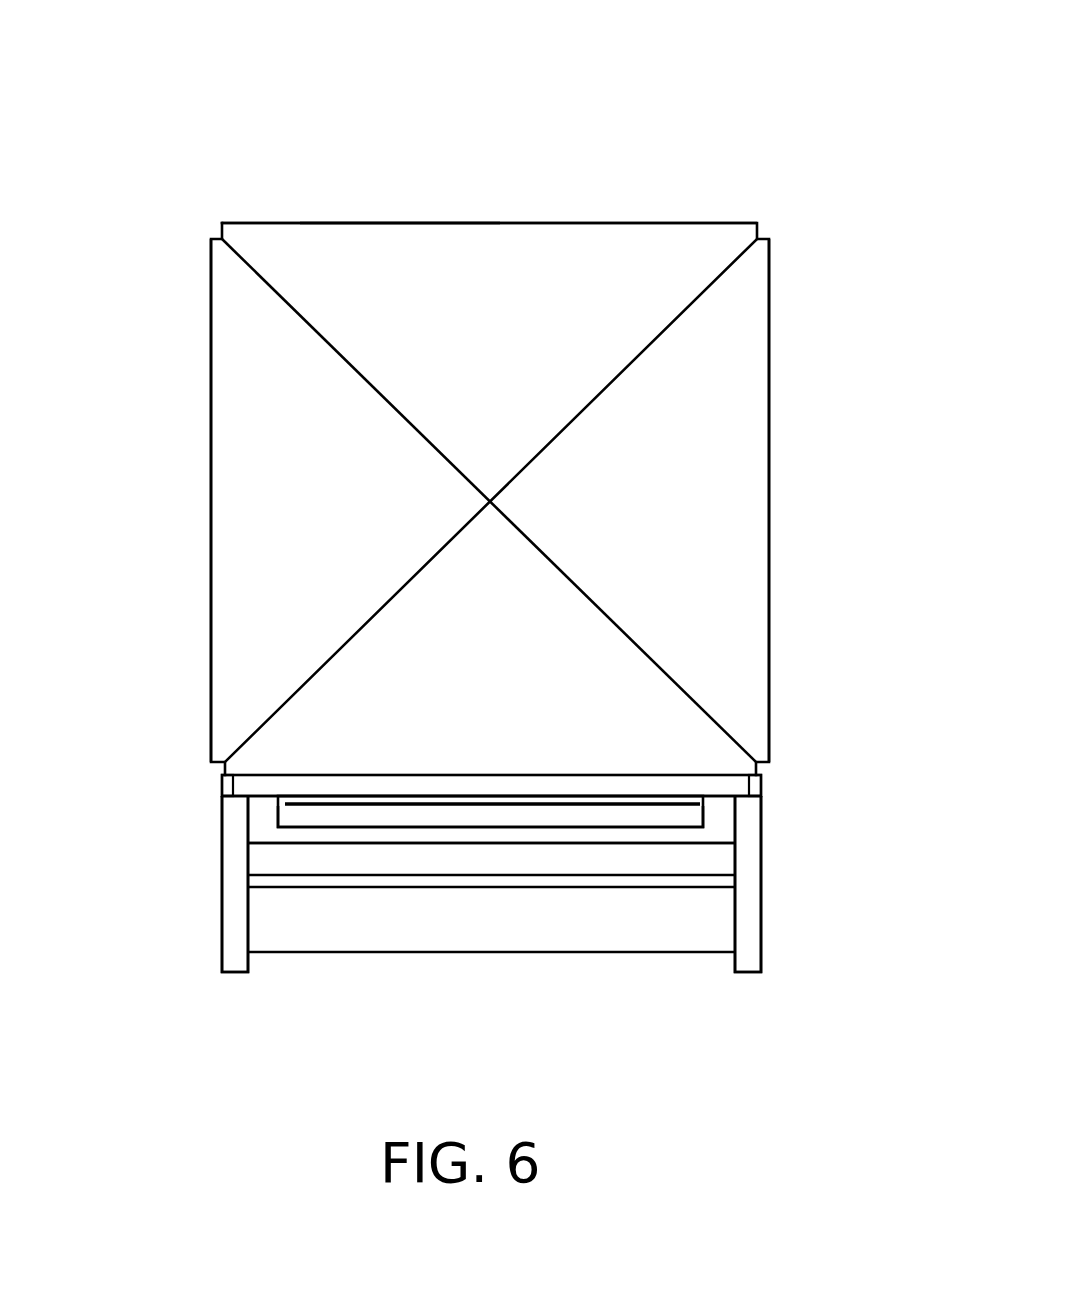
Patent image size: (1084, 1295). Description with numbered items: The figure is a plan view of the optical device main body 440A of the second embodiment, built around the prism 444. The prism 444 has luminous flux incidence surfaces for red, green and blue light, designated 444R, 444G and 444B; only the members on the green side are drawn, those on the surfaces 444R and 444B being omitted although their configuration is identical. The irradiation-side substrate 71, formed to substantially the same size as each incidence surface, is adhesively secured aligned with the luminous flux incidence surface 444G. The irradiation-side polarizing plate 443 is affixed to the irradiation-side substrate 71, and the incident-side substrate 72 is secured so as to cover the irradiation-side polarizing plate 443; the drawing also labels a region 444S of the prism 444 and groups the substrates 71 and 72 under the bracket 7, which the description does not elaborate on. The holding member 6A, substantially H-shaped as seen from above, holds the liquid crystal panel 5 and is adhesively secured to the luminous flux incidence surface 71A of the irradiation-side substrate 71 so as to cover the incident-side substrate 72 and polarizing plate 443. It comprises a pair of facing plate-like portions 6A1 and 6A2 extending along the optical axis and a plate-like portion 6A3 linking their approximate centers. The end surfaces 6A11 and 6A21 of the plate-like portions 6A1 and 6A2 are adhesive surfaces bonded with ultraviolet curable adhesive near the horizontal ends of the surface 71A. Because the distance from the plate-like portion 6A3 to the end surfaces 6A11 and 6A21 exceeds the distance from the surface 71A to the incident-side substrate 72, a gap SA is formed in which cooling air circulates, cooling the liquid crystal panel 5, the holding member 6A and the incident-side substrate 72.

The optical device main body 440A is at (805, 160).
The prism 444 is at (622, 248).
The light exit surface of cross dichroic prism 444S is at (400, 223).
The luminous flux incidence surface for red light 444R is at (211, 478).
The luminous flux incidence surface for blue light 444B is at (768, 470).
The luminous flux incidence surface for green light 444G is at (480, 777).
The irradiation-side polarizing plate 443 is at (353, 793).
The heat transfer member 7 is at (630, 679).
The irradiation-side substrate 71 is at (560, 787).
The luminous flux incidence surface of irradiation-side substrate 71A is at (412, 795).
The incident-side substrate 72 is at (622, 808).
The holding member 6A is at (755, 875).
The plate-like portion 6A1 is at (233, 923).
The plate-like portion 6A2 is at (756, 935).
The plate-like portion 6A3 is at (597, 858).
The end surface 6A11 is at (228, 795).
The end surface 6A21 is at (751, 796).
The gap SA is at (725, 828).
The liquid crystal panel 5 is at (435, 937).